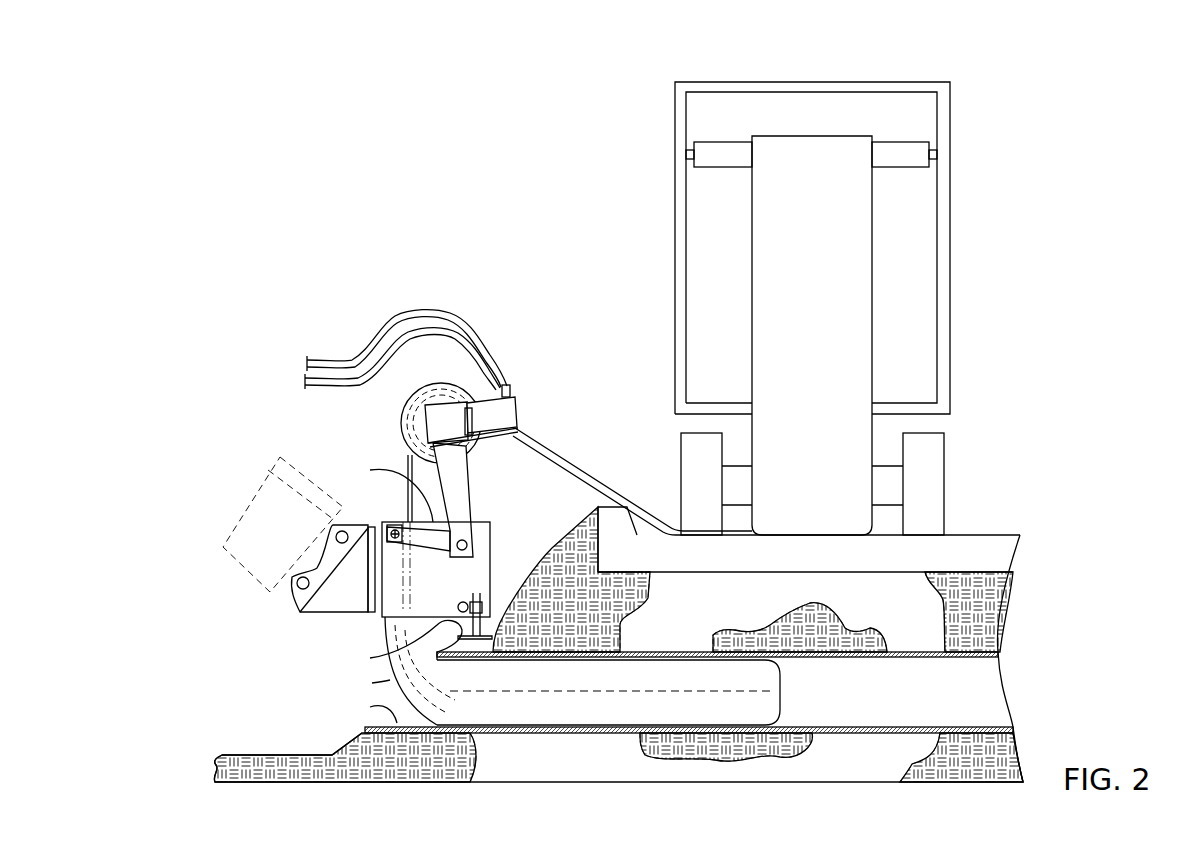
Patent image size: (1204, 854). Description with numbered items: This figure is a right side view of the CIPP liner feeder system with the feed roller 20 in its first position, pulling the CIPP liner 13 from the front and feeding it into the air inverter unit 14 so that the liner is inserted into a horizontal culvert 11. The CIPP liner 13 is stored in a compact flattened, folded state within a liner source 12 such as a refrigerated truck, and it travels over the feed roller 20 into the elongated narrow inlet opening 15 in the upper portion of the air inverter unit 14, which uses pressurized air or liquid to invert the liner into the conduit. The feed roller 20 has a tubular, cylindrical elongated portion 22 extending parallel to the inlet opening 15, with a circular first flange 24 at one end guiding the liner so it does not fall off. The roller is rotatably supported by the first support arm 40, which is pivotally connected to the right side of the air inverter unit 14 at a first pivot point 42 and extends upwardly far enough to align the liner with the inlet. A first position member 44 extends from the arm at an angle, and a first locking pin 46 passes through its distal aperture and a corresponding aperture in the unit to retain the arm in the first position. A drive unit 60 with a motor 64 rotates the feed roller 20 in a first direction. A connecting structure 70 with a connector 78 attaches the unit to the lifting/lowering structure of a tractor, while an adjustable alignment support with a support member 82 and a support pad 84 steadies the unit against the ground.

The culvert 11 is at (397, 725).
The liner source 12 is at (953, 232).
The CIPP liner 13 is at (772, 262).
The air inverter unit 14 is at (493, 582).
The inlet opening 15 is at (380, 650).
The feed roller 20 is at (448, 378).
The elongated portion 22 is at (407, 446).
The first flange 24 is at (413, 378).
The first support arm 40 is at (470, 500).
The first pivot point 42 is at (475, 545).
The first position member 44 is at (387, 470).
The first locking pin 46 is at (393, 524).
The drive unit 60 is at (514, 436).
The motor 64 is at (515, 395).
The connecting structure 70 is at (367, 596).
The connector 78 is at (294, 599).
The support member 82 is at (372, 656).
The support pad 84 is at (373, 684).